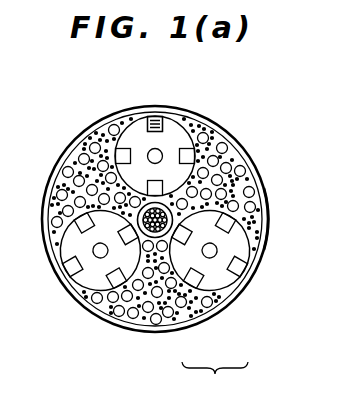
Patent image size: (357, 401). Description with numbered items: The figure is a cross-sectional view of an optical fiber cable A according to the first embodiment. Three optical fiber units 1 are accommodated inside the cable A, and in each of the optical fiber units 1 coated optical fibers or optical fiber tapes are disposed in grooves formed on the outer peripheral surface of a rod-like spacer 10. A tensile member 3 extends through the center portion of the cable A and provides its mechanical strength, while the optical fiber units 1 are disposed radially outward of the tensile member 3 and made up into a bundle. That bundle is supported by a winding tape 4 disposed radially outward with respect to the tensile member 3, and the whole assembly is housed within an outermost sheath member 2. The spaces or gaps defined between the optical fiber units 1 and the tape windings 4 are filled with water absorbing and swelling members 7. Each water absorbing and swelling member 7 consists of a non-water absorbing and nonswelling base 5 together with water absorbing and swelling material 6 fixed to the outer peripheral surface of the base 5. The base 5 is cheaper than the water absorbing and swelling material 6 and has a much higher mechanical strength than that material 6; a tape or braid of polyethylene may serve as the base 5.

The optical fiber cable A is at (84, 107).
The optical fiber unit 1 is at (174, 131).
The rod-like spacer 10 is at (130, 134).
The outermost sheath member 2 is at (224, 133).
The tensile member 3 is at (249, 167).
The winding tape 4 is at (268, 209).
The non-water absorbing and nonswelling base 5 is at (210, 319).
The water absorbing and swelling material 6 is at (185, 322).
The water absorbing and swelling member 7 is at (215, 379).